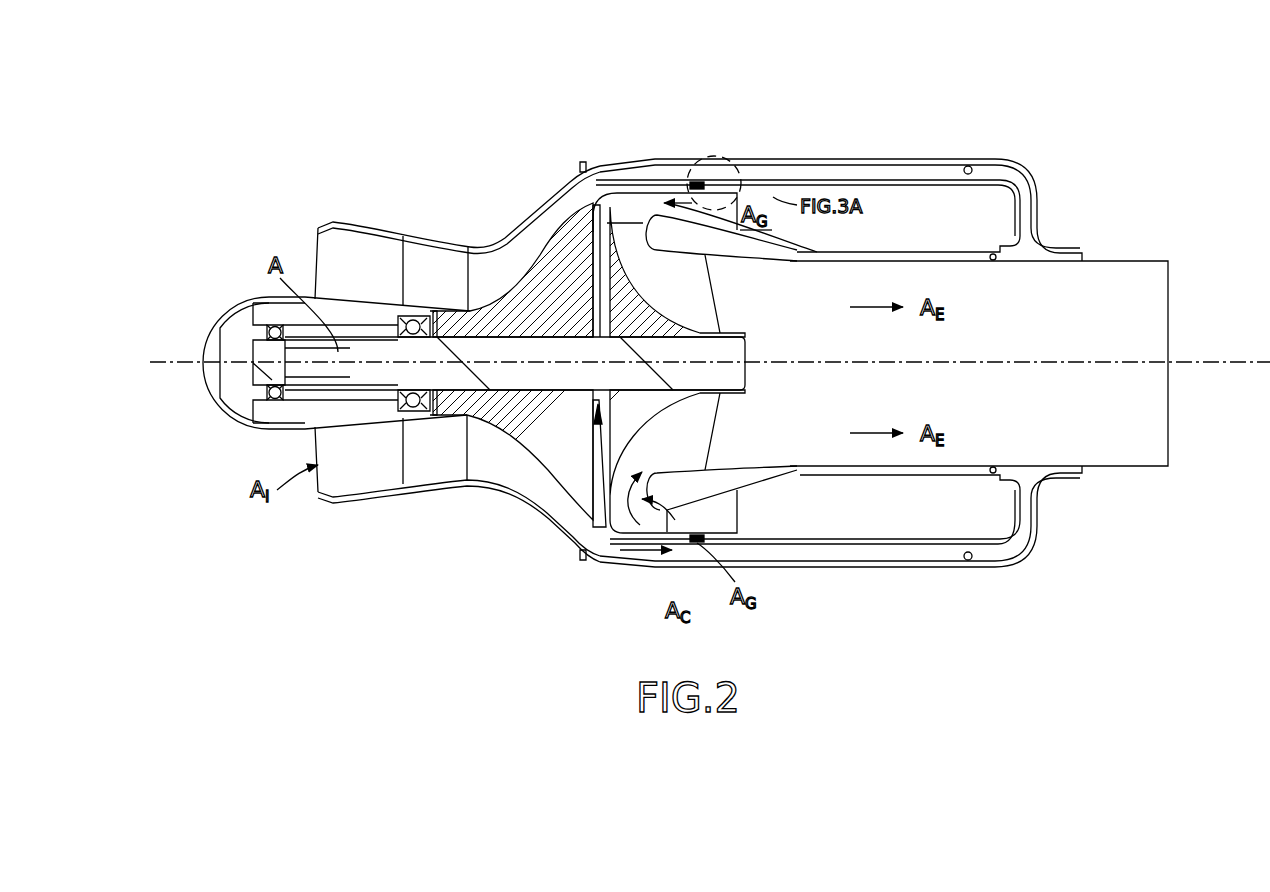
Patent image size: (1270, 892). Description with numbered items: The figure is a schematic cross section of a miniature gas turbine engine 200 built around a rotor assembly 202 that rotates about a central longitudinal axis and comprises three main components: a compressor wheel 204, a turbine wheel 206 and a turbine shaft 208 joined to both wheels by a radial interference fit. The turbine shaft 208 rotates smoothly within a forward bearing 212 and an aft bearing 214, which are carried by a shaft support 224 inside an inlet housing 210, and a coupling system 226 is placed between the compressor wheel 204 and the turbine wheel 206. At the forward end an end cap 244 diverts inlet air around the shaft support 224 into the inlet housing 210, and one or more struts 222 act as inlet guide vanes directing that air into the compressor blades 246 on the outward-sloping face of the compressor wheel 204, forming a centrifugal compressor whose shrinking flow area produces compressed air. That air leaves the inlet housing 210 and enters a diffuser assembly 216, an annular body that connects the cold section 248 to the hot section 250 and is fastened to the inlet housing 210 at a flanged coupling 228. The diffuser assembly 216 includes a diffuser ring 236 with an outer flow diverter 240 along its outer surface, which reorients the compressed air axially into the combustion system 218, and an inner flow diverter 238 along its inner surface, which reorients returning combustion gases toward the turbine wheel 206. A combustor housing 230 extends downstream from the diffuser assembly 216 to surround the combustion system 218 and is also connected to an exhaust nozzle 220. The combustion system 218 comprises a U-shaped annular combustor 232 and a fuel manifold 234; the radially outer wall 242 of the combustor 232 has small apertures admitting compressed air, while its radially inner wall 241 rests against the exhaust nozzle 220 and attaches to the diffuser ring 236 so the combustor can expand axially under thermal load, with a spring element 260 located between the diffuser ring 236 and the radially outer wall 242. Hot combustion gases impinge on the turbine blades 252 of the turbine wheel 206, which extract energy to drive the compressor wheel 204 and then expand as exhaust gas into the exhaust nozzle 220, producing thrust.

The miniature gas turbine engine 200 is at (280, 108).
The rotor assembly 202 is at (756, 312).
The compressor wheel 204 is at (556, 268).
The turbine wheel 206 is at (662, 415).
The turbine shaft 208 is at (578, 389).
The inlet housing 210 is at (342, 224).
The forward bearing 212 is at (262, 420).
The aft bearing 214 is at (413, 405).
The diffuser assembly 216 is at (642, 152).
The combustion system 218 is at (1000, 159).
The exhaust nozzle 220 is at (1112, 467).
The struts 222 is at (460, 291).
The shaft support 224 is at (316, 413).
The coupling system 226 is at (608, 548).
The flanged coupling 228 is at (582, 162).
The combustor housing 230 is at (828, 162).
The combustor 232 is at (900, 162).
The fuel manifold 234 is at (998, 571).
The diffuser ring 236 is at (698, 182).
The inner flow diverter 238 is at (748, 200).
The outer flow diverter 240 is at (608, 168).
The radially inner wall 241 is at (960, 480).
The radially outer wall 242 is at (800, 553).
The end cap 244 is at (212, 347).
The compressor blades 246 is at (525, 279).
The cold section 248 is at (452, 200).
The hot section 250 is at (873, 132).
The turbine blades 252 is at (702, 301).
The spring element 260 is at (742, 180).